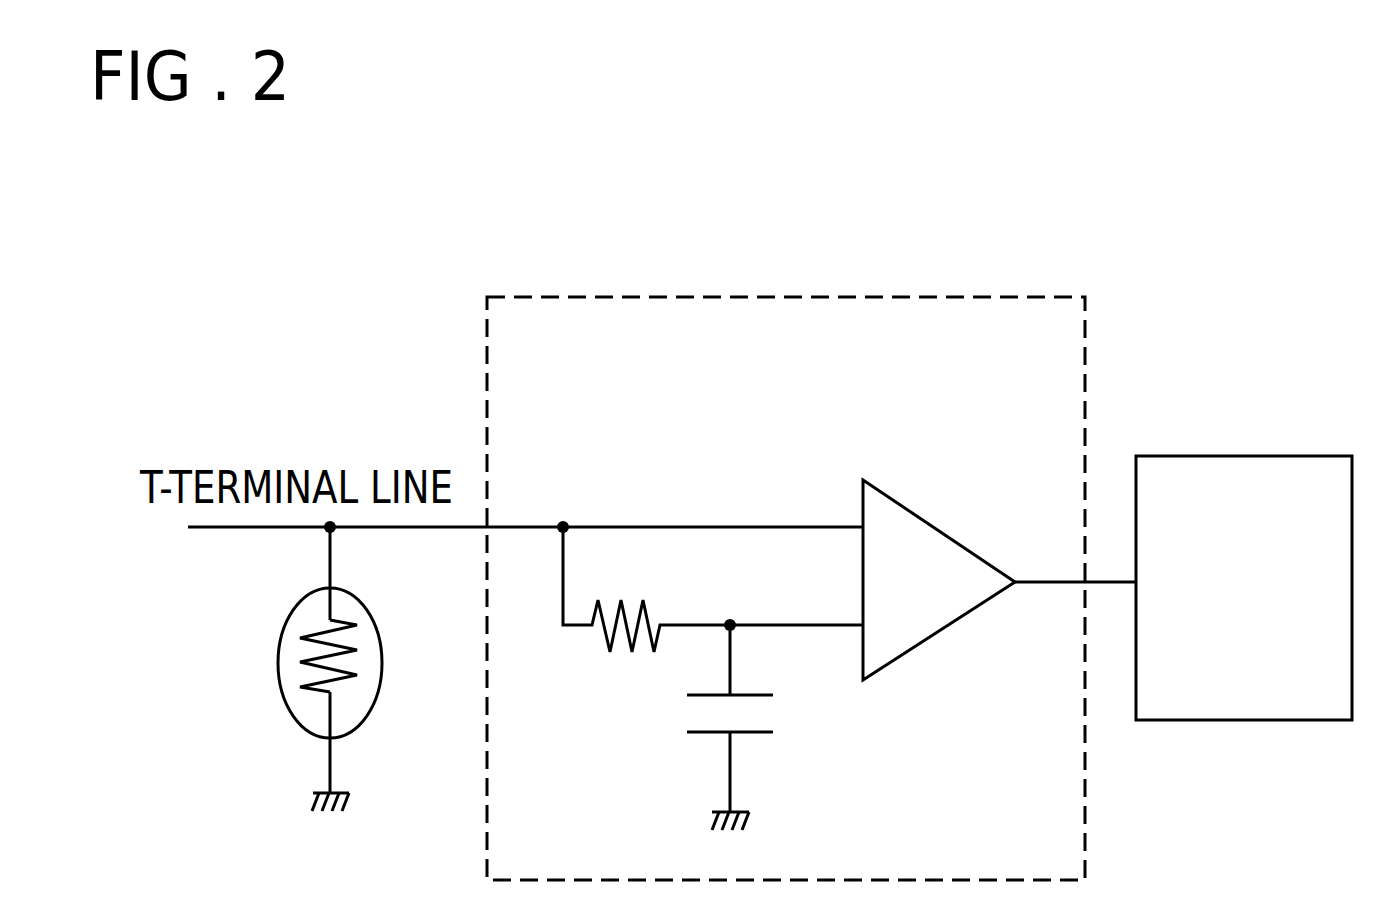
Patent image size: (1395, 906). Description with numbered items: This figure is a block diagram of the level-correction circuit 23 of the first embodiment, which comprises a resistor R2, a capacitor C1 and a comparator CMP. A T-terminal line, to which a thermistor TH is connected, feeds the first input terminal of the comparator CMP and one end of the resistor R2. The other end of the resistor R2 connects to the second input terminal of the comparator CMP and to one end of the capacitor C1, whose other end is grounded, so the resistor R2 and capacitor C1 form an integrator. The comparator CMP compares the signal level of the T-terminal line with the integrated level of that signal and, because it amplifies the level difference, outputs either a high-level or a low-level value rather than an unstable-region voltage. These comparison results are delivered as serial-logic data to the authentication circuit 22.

The authentication circuit 22 is at (1245, 448).
The level-correction circuit 23 is at (758, 297).
The thermistor TH is at (350, 669).
The resistor R2 is at (712, 620).
The capacitor C1 is at (762, 727).
The comparator CMP is at (896, 567).